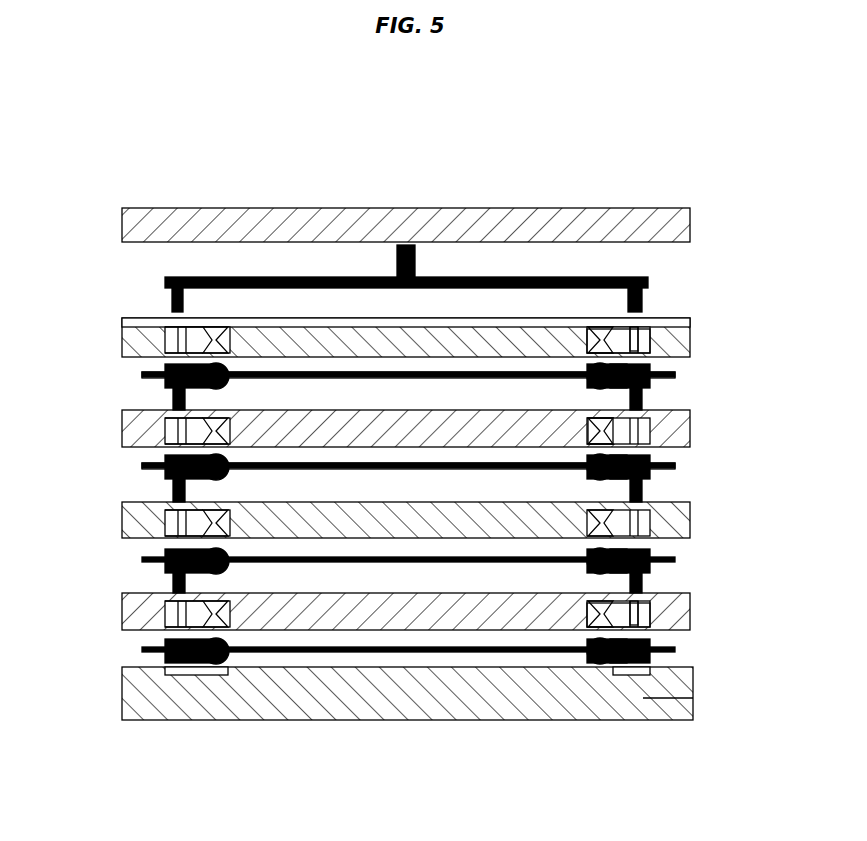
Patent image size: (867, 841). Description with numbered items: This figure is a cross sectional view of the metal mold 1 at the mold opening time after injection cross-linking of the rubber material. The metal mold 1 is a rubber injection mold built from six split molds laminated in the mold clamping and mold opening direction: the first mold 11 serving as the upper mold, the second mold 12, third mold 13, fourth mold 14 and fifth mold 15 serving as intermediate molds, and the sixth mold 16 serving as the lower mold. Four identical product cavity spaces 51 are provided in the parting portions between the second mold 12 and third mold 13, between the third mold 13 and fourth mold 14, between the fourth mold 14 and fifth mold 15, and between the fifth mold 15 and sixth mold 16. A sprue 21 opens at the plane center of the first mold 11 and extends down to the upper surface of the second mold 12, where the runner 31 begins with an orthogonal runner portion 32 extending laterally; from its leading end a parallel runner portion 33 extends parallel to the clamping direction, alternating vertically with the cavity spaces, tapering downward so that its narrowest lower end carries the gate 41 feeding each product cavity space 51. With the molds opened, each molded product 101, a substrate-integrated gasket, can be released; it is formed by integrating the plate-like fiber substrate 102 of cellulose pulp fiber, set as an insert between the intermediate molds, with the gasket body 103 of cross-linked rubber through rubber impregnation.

The metal mold 1 is at (226, 188).
The first mold 11 is at (120, 226).
The second mold 12 is at (371, 244).
The third mold 13 is at (120, 430).
The fourth mold 14 is at (120, 528).
The fifth mold 15 is at (120, 622).
The sixth mold 16 is at (120, 690).
The sprue 21 is at (407, 245).
The runner 31 is at (437, 318).
The orthogonal runner portion 32 is at (488, 318).
The parallel runner portion 33 is at (660, 330).
The gate 41 is at (652, 333).
The product cavity space 51 is at (665, 425).
The molded product 101 is at (675, 376).
The fiber substrate 102 is at (390, 376).
The gasket body 103 is at (603, 385).